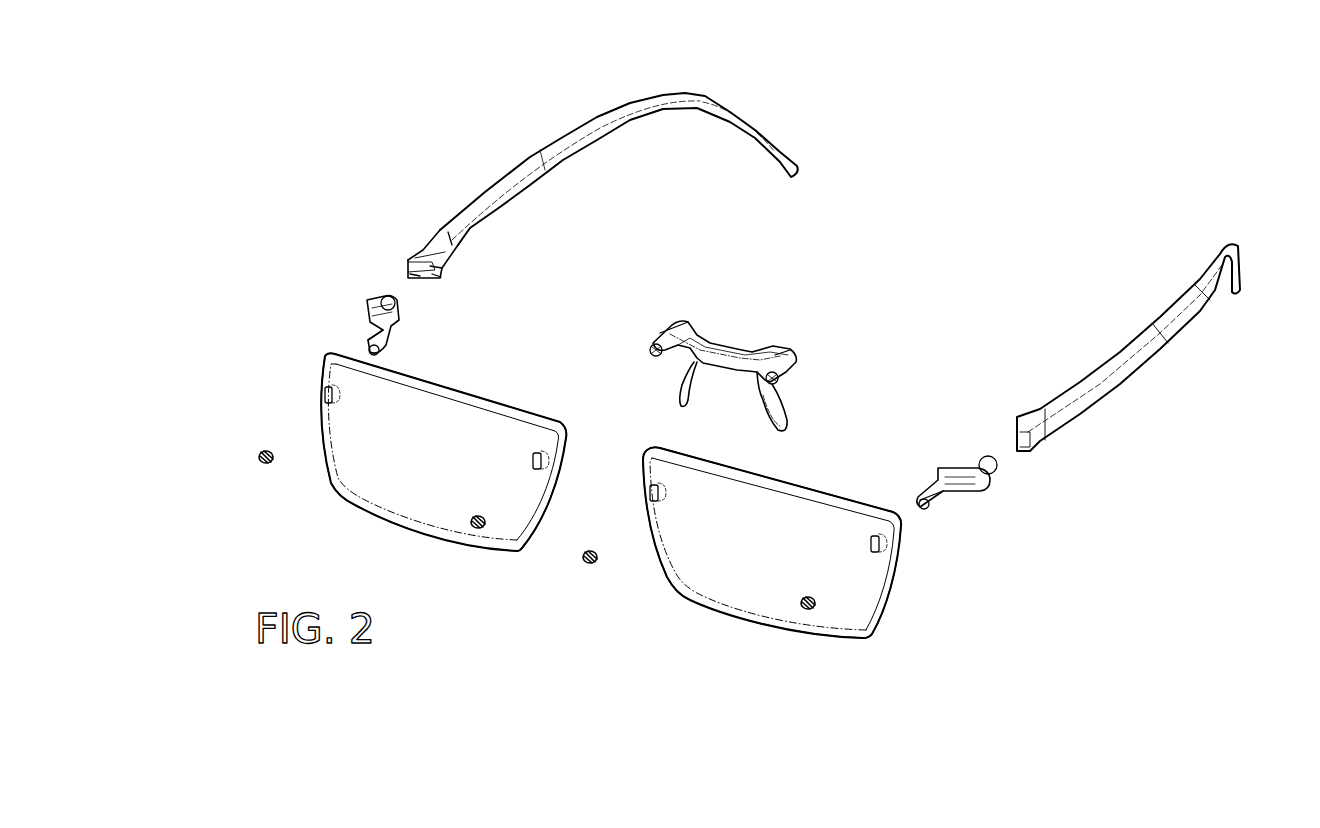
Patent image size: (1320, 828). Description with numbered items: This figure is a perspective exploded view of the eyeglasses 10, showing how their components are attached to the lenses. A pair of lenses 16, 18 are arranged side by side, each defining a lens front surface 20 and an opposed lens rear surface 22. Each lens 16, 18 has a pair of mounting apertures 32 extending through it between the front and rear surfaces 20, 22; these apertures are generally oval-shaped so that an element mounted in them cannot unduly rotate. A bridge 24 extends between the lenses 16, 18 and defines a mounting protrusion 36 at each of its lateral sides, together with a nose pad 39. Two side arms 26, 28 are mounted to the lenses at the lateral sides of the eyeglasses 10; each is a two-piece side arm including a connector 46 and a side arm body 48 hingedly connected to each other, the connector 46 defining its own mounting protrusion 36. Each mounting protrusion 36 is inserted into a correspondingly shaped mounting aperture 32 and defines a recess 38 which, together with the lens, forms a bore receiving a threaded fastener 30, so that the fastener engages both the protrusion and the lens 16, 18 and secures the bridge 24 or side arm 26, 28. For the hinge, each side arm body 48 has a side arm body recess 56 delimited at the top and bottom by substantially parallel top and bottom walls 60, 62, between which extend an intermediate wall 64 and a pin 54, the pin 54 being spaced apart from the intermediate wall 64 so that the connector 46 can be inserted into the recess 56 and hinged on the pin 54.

The eyeglasses 10 is at (209, 142).
The lens 16 is at (494, 386).
The lens 18 is at (813, 468).
The lens front surface 20 is at (390, 440).
The lens rear surface 22 is at (505, 405).
The bridge 24 is at (738, 326).
The side arm 26 is at (373, 214).
The side arm 28 is at (975, 354).
The threaded fastener 30 is at (260, 462).
The mounting aperture 32 is at (325, 395).
The mounting protrusion 36 is at (371, 333).
The recess 38 is at (383, 353).
The nose pad 39 is at (680, 396).
The connector 46 is at (355, 299).
The side arm body 48 is at (528, 142).
The pin 54 is at (436, 270).
The side arm body recess 56 is at (415, 276).
The top wall 60 is at (424, 255).
The bottom wall 62 is at (441, 276).
The intermediate wall 64 is at (405, 265).